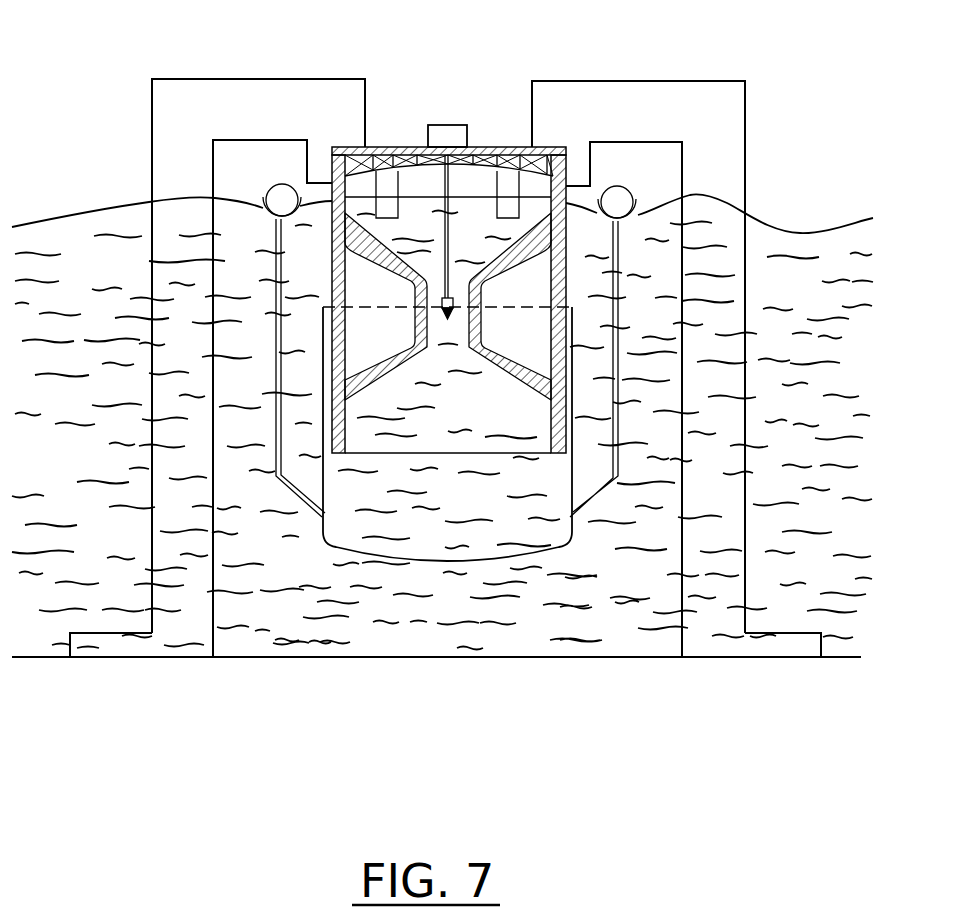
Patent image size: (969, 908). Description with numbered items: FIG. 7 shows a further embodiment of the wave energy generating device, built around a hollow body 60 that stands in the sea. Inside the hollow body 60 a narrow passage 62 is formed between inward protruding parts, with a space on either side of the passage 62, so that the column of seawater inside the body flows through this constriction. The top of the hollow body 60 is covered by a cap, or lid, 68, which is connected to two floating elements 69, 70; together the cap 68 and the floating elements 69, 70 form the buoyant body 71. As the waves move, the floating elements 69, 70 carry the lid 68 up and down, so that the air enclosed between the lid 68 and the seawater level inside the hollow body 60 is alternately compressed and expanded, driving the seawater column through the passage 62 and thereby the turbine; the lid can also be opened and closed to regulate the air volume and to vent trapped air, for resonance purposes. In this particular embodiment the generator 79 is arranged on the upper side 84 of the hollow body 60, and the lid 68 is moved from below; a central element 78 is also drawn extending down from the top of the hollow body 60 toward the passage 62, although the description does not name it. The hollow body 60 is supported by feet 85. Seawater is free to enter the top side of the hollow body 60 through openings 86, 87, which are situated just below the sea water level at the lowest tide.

The hollow body 60 is at (300, 265).
The narrow passage 62 is at (457, 351).
The cap 68 is at (427, 562).
The floating element 69 is at (280, 184).
The floating element 70 is at (622, 198).
The buoyant body 71 is at (312, 537).
The shaft 78 is at (444, 185).
The generator 79 is at (450, 135).
The upper side 84 is at (474, 147).
The feet 85 is at (208, 98).
The opening 86 is at (389, 178).
The opening 87 is at (509, 183).